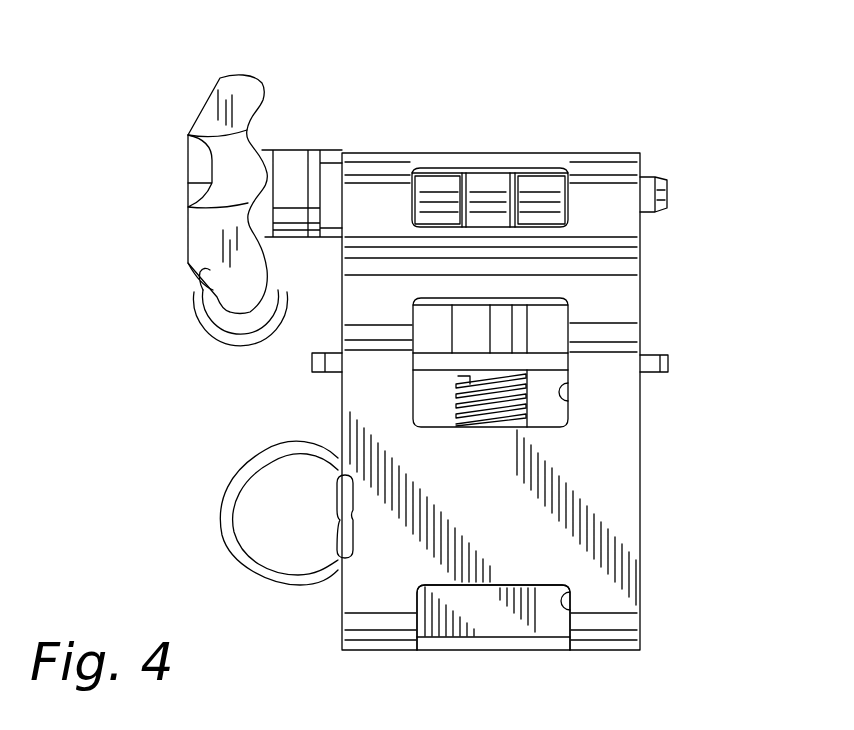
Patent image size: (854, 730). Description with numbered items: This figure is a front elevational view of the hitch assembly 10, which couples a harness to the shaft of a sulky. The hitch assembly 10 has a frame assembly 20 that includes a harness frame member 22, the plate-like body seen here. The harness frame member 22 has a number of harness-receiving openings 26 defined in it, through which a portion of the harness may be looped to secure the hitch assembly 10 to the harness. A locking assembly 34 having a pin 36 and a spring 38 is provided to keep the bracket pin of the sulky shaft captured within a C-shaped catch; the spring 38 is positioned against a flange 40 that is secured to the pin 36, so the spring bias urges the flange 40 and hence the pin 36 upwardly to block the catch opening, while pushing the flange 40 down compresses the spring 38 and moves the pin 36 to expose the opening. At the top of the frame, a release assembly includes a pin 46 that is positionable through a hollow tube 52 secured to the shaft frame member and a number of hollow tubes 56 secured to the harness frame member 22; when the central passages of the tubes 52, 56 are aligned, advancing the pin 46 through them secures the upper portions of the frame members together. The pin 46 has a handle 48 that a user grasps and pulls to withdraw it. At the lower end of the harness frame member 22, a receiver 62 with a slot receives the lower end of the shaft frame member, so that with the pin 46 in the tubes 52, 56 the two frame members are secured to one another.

The hitch assembly 10 is at (708, 118).
The frame assembly 20 is at (648, 498).
The harness frame member 22 is at (640, 540).
The harness-receiving openings 26 is at (561, 392).
The locking assembly 34 is at (413, 328).
The pin 36 is at (500, 325).
The spring 38 is at (505, 425).
The flange 40 is at (668, 362).
The pin 46 is at (668, 184).
The handle 48 is at (245, 82).
The hollow tube 52 is at (488, 178).
The hollow tubes 56 is at (440, 178).
The receiver 62 is at (498, 640).